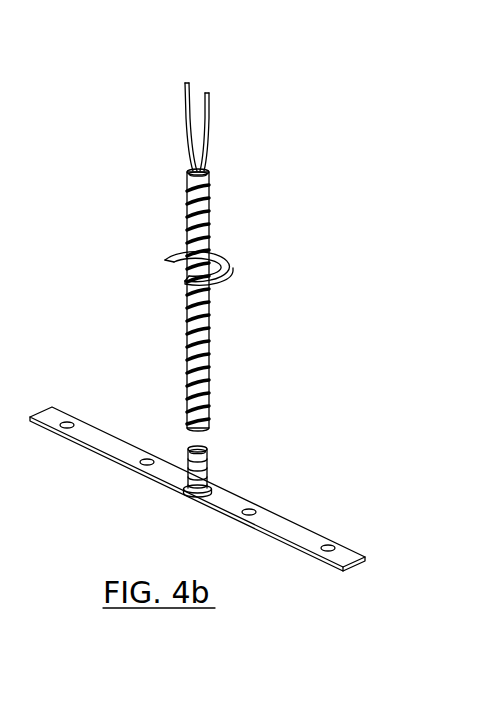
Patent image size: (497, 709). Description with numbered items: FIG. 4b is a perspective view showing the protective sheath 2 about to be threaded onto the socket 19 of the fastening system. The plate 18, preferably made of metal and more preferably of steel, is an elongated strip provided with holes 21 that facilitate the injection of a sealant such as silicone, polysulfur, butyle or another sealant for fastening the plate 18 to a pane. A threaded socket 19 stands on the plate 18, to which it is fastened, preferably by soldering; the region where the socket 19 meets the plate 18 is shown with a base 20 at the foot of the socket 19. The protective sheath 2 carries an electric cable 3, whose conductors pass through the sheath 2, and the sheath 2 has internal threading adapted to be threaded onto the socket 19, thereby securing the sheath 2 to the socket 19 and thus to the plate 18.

The protective sheath 2 is at (183, 228).
The electric cable 3 is at (215, 128).
The plate 18 is at (302, 523).
The threaded socket 19 is at (210, 450).
The connector flange 20 is at (182, 490).
The holes 21 is at (147, 452).